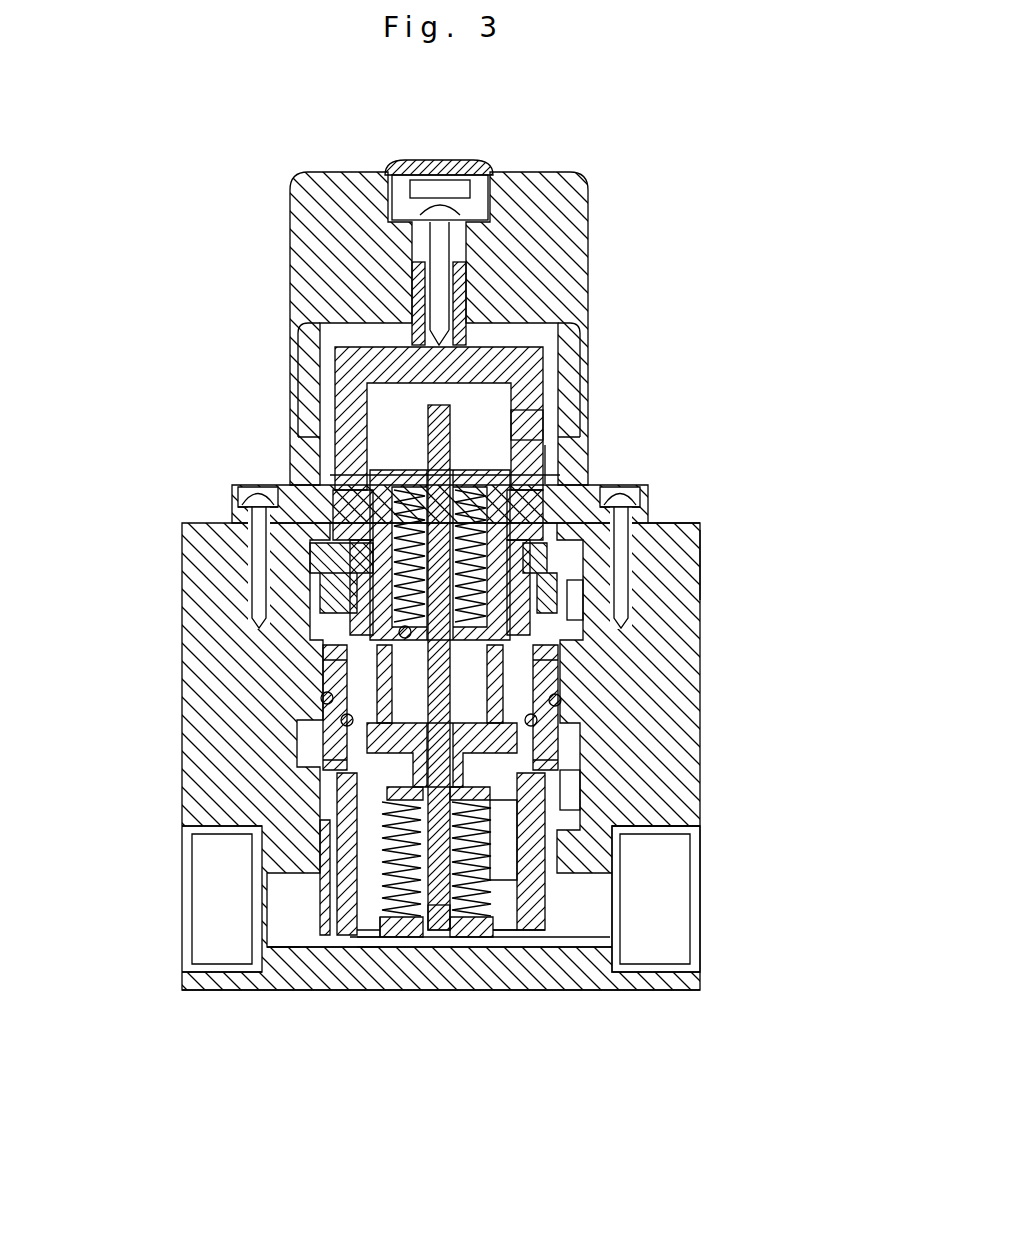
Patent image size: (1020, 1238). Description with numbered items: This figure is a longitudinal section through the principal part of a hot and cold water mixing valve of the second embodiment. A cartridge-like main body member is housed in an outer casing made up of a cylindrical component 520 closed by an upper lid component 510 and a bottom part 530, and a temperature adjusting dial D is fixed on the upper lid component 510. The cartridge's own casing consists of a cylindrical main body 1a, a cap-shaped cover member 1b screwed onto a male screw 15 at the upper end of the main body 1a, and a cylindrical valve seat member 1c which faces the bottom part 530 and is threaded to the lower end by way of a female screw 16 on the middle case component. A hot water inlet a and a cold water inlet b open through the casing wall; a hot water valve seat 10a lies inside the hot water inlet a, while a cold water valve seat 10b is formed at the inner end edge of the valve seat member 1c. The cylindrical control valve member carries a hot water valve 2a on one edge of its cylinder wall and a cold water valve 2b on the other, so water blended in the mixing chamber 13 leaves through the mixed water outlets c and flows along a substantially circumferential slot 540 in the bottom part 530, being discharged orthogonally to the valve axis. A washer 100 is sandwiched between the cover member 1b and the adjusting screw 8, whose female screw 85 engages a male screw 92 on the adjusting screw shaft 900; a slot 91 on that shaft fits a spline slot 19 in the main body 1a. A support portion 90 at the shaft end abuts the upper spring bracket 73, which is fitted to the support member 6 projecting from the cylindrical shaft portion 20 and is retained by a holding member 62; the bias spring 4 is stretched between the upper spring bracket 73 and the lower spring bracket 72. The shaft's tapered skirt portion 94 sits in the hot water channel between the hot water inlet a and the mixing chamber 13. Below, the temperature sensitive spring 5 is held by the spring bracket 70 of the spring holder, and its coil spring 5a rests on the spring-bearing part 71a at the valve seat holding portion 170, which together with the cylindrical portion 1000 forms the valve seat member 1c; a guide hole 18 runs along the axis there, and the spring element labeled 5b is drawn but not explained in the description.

The washer 100 is at (490, 360).
The temperature adjusting dial D is at (590, 258).
The holding member 62 is at (335, 350).
The female screw 85 is at (345, 425).
The male screw 92 is at (330, 470).
The male screw 15 is at (330, 500).
The adjusting screw shaft 900 is at (332, 595).
The slot 91 is at (360, 600).
The spline slot 19 is at (395, 625).
The lower spring bracket 72 is at (320, 655).
The hot water inlet a is at (330, 688).
The hot water valve 2a is at (377, 690).
The cylindrical shaft portion 20 is at (425, 735).
The tapered skirt portion 94 is at (318, 735).
The cold water inlet b is at (335, 790).
The cold water valve 2b is at (337, 805).
The female screw 16 is at (325, 855).
The temperature sensitive spring 5 is at (97, 912).
The coil spring 5a is at (350, 905).
The spring seat lower plate 5b is at (345, 925).
The valve seat member 1c is at (192, 990).
The cylindrical portion 1000 is at (300, 948).
The mixed water outlet c is at (345, 935).
The spring-bearing part 71a is at (392, 935).
The guide hole 18 is at (412, 905).
The support member 6 is at (440, 935).
The valve seat holding portion 170 is at (518, 930).
The bias spring 4 is at (397, 487).
The upper spring bracket 73 is at (460, 478).
The adjusting screw 8 is at (570, 370).
The support portion 90 is at (535, 425).
The upper lid component 510 is at (647, 482).
The cover member 1b is at (543, 457).
The cylindrical component 520 is at (660, 520).
The main body 1a is at (700, 556).
The hot water valve seat 10a is at (595, 605).
The cold water valve seat 10b is at (560, 765).
The spring bracket 70 is at (545, 790).
The mixing chamber 13 is at (507, 813).
The slot 540 is at (700, 897).
The bottom part 530 is at (700, 985).